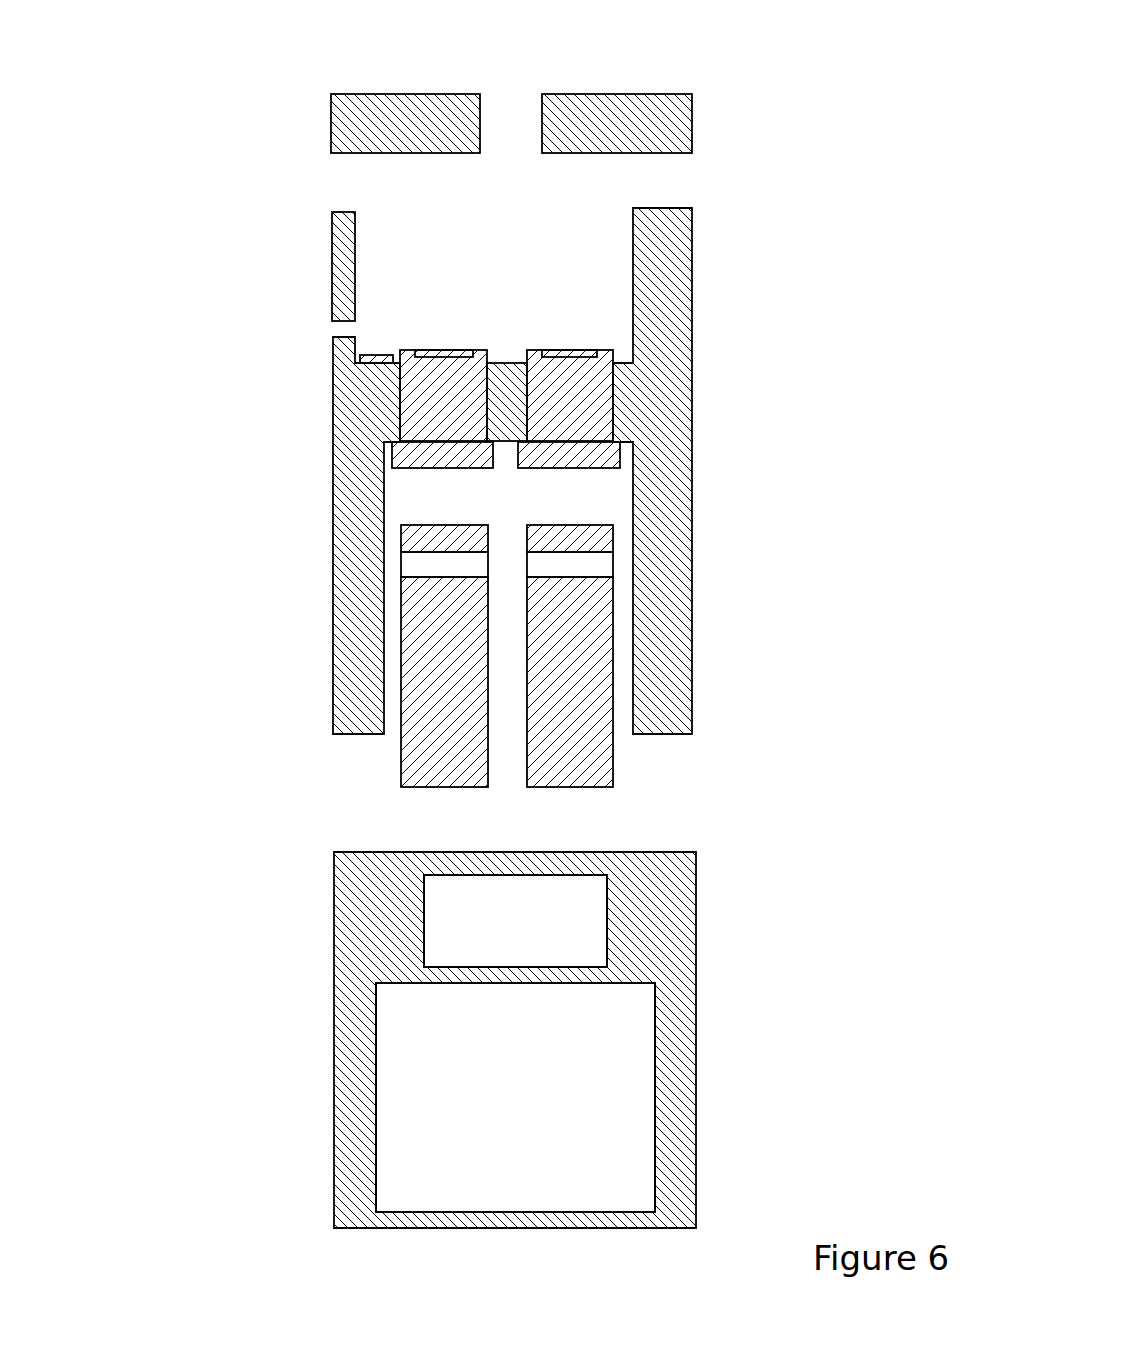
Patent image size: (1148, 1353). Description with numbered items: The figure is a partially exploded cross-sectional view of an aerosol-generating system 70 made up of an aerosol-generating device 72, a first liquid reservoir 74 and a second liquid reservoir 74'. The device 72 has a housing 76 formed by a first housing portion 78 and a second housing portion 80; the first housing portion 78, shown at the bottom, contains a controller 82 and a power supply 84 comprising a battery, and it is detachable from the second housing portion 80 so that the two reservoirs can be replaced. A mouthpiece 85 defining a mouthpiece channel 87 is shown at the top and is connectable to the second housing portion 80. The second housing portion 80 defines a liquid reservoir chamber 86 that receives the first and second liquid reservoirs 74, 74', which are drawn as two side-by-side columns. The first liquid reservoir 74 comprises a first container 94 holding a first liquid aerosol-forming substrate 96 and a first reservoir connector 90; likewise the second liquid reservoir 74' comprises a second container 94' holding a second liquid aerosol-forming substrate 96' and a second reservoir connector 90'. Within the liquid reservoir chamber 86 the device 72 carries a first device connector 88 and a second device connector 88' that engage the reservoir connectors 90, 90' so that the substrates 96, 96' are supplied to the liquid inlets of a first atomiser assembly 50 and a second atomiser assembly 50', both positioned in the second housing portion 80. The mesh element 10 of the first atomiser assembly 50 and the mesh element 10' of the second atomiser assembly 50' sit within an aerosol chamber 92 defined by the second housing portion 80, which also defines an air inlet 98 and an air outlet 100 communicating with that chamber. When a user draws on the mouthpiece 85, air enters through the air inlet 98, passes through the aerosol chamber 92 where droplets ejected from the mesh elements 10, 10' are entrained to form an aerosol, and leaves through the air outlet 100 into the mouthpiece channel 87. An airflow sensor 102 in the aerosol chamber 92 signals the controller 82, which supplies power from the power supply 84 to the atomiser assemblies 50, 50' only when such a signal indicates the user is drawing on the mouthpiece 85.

The aerosol-generating system 70 is at (139, 79).
The mouthpiece 85 is at (615, 93).
The mouthpiece channel 87 is at (502, 105).
The air outlet 100 is at (607, 207).
The aerosol chamber 92 is at (390, 247).
The air inlet 98 is at (333, 329).
The aerosol-generating device 72 is at (331, 559).
The housing 76 is at (331, 700).
The liquid reservoir chamber 86 is at (393, 645).
The second housing portion 80 is at (691, 543).
The airflow sensor 102 is at (377, 364).
The first atomiser assembly 50 is at (366, 359).
The second atomiser assembly 50' is at (652, 358).
The mesh element 10 is at (446, 316).
The mesh element 10' is at (575, 316).
The first device connector 88 is at (369, 468).
The second device connector 88' is at (648, 466).
The first liquid reservoir 74 is at (366, 658).
The second liquid reservoir 74' is at (652, 656).
The first reservoir connector 90 is at (366, 526).
The second reservoir connector 90' is at (652, 525).
The first container 94 is at (366, 581).
The second container 94' is at (652, 580).
The first liquid aerosol-forming substrate 96 is at (405, 692).
The second liquid aerosol-forming substrate 96' is at (616, 690).
The first housing portion 78 is at (471, 1040).
The controller 82 is at (529, 934).
The power supply 84 is at (529, 1113).